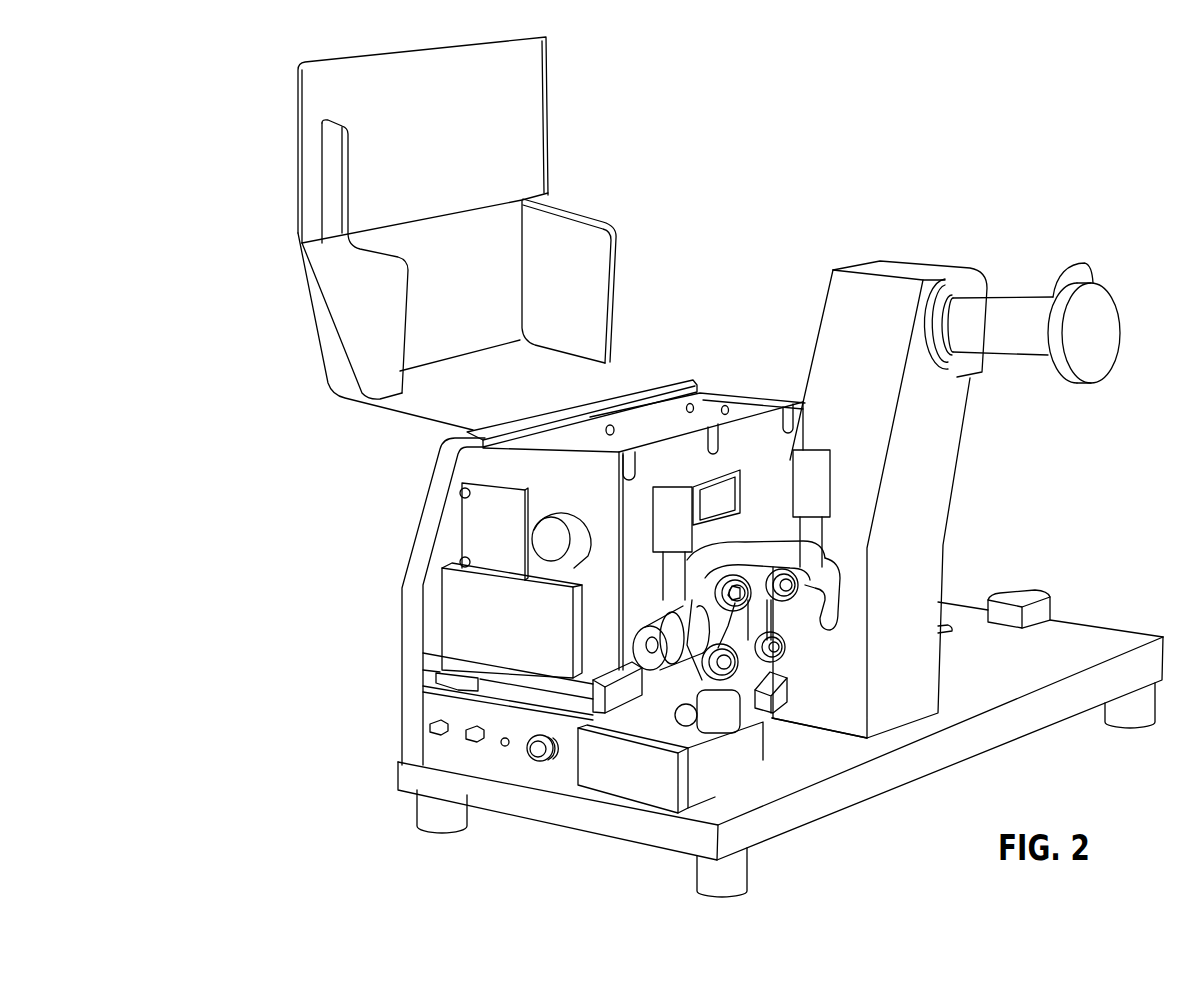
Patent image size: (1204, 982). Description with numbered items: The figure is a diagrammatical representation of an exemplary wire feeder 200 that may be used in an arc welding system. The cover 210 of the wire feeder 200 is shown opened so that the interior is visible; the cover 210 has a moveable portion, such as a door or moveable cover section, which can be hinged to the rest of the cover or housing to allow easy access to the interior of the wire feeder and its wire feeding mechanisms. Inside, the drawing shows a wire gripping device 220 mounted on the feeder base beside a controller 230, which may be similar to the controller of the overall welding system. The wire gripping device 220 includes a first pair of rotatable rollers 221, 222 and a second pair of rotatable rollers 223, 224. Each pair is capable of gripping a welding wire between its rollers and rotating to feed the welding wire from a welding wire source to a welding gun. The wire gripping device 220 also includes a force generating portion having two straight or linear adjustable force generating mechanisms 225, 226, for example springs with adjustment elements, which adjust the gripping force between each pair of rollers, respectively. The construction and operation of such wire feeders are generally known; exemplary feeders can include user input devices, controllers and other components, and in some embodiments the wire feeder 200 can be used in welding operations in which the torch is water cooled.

The wire feeder 200 is at (800, 135).
The cover 210 is at (295, 105).
The wire gripping device 220 is at (910, 503).
The rotatable roller 221 is at (730, 580).
The rotatable roller 222 is at (725, 660).
The rotatable roller 223 is at (780, 582).
The rotatable roller 224 is at (778, 638).
The adjustable force generating mechanism 225 is at (676, 500).
The adjustable force generating mechanism 226 is at (813, 460).
The controller 230 is at (493, 620).